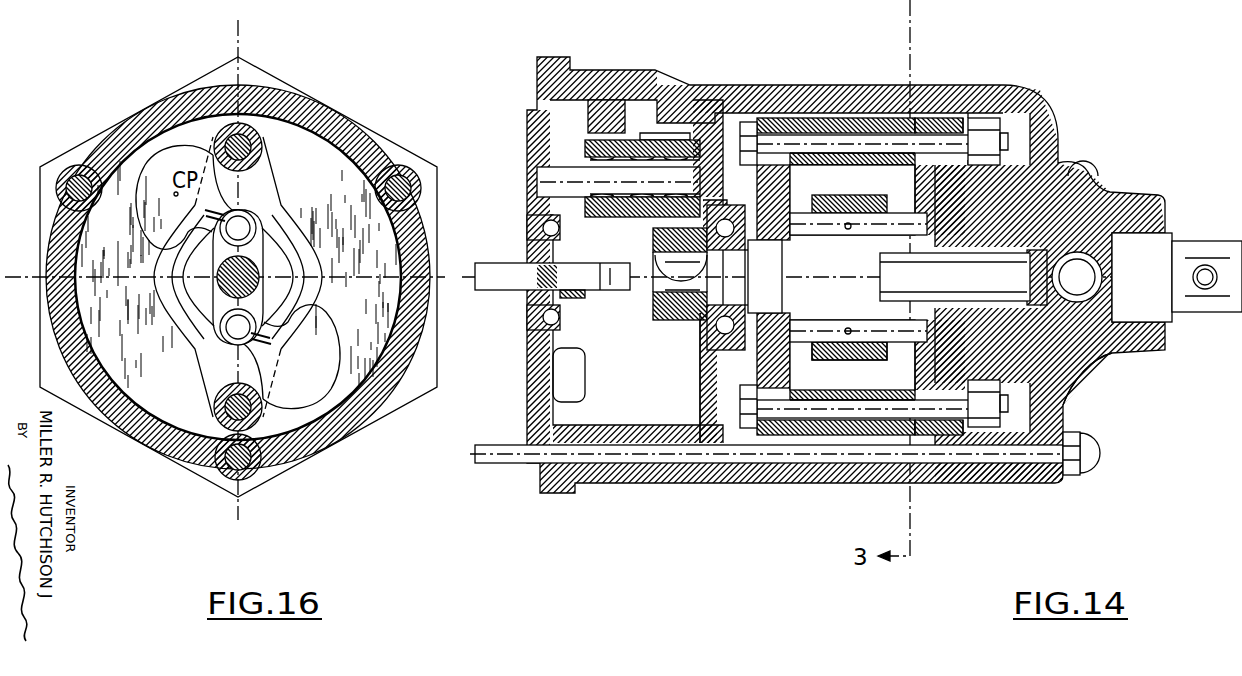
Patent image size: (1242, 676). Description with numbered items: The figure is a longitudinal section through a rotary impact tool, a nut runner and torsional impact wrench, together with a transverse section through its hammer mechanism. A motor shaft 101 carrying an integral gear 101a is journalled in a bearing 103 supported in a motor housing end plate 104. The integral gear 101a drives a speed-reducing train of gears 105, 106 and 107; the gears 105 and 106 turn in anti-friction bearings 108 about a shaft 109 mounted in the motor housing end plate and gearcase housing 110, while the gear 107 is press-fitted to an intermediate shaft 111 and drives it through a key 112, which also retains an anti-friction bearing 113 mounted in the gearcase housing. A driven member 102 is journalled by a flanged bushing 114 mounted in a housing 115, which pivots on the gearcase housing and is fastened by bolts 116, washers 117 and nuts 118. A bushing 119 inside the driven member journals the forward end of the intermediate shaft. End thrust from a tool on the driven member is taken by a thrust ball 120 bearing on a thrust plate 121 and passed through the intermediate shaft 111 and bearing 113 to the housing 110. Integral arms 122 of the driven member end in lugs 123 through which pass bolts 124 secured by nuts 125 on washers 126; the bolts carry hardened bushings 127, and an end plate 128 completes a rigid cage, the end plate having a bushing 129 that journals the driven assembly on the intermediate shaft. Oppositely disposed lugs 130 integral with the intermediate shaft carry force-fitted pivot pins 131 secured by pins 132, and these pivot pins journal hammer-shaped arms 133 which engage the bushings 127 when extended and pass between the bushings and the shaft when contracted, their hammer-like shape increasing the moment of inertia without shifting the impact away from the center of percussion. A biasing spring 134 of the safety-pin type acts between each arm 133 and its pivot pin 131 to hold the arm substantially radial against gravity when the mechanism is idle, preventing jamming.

In FIG. 14, the motor shaft 101 is at (515, 283).
In FIG. 14, the integral gear 101a is at (590, 299).
In FIG. 14, the driven member 102 is at (1200, 247).
In FIG. 14, the bearing 103 is at (540, 243).
In FIG. 14, the motor housing end plate 104 is at (530, 219).
In FIG. 14, the gear 105 is at (603, 98).
In FIG. 14, the gear 106 is at (672, 133).
In FIG. 14, the gear 107 is at (690, 313).
In FIG. 14, the anti-friction bearings 108 is at (612, 161).
In FIG. 14, the shaft 109 is at (540, 181).
In FIG. 16, the gearcase housing 110 is at (77, 155).
In FIG. 14, the gearcase housing 110 is at (633, 72).
In FIG. 16, the intermediate shaft 111 is at (224, 287).
In FIG. 14, the intermediate shaft 111 is at (680, 269).
In FIG. 14, the key 112 is at (690, 321).
In FIG. 14, the anti-friction bearing 113 is at (708, 333).
In FIG. 14, the flanged bushing 114 is at (1165, 322).
In FIG. 16, the housing 115 is at (366, 146).
In FIG. 14, the housing 115 is at (1080, 352).
In FIG. 16, the bolts 116 is at (225, 462).
In FIG. 14, the bolts 116 is at (482, 465).
In FIG. 14, the washers 117 is at (1063, 477).
In FIG. 14, the nuts 118 is at (1098, 179).
In FIG. 14, the bushing 119 is at (955, 257).
In FIG. 14, the thrust ball 120 is at (1077, 277).
In FIG. 14, the thrust plate 121 is at (1027, 266).
In FIG. 14, the arms 122 is at (953, 184).
In FIG. 14, the lugs 123 is at (920, 118).
In FIG. 16, the bolts 124 is at (216, 141).
In FIG. 14, the bolts 124 is at (812, 137).
In FIG. 14, the nuts 125 is at (1020, 85).
In FIG. 14, the washers 126 is at (965, 115).
In FIG. 16, the hardened bushings 127 is at (251, 150).
In FIG. 14, the hardened bushings 127 is at (870, 118).
In FIG. 16, the end plate 128 is at (275, 209).
In FIG. 14, the end plate 128 is at (760, 120).
In FIG. 14, the bushing 129 is at (621, 338).
In FIG. 16, the lugs 130 is at (262, 242).
In FIG. 14, the lugs 130 is at (838, 348).
In FIG. 16, the pivot pins 131 is at (232, 343).
In FIG. 14, the pivot pins 131 is at (849, 316).
In FIG. 14, the pins 132 is at (850, 281).
In FIG. 16, the hammer-shaped arms 133 is at (142, 206).
In FIG. 16, the biasing spring 134 is at (204, 213).
In FIG. 14, the biasing spring 134 is at (920, 339).